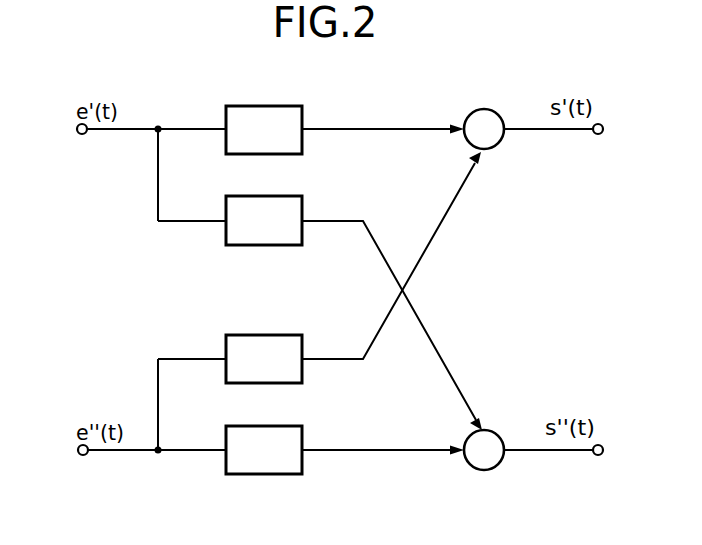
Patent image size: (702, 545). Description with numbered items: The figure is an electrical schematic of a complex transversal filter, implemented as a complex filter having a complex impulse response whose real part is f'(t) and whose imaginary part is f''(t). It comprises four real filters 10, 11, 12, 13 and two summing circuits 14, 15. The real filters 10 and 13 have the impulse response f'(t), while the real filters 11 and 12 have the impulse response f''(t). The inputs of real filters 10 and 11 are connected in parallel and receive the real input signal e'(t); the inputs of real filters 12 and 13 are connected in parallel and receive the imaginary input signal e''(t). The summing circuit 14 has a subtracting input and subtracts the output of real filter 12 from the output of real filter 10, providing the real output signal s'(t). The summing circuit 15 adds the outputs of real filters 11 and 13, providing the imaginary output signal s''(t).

The real filter 10 is at (278, 106).
The real filter 11 is at (274, 172).
The real filter 12 is at (278, 335).
The real filter 13 is at (279, 403).
The summing circuit 14 is at (492, 77).
The summing circuit 15 is at (482, 470).